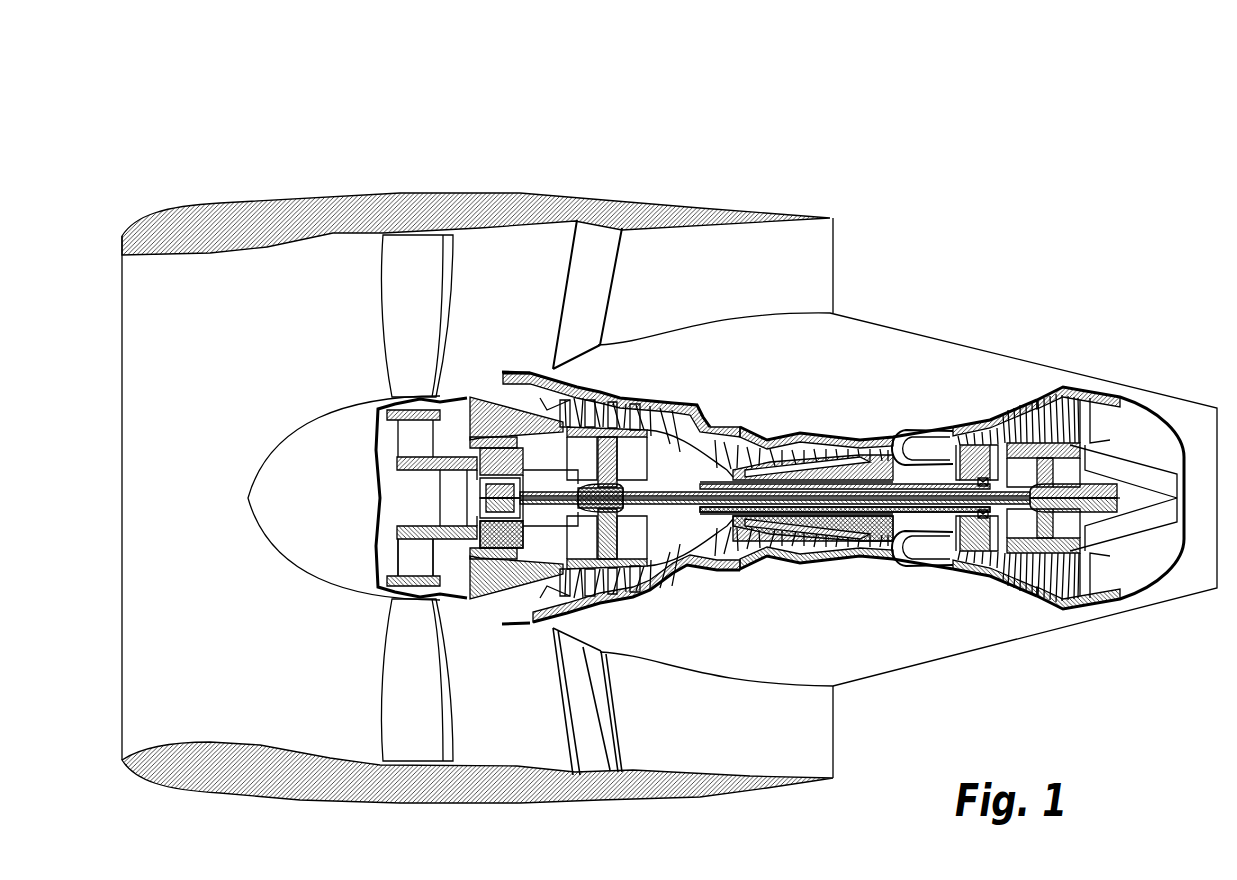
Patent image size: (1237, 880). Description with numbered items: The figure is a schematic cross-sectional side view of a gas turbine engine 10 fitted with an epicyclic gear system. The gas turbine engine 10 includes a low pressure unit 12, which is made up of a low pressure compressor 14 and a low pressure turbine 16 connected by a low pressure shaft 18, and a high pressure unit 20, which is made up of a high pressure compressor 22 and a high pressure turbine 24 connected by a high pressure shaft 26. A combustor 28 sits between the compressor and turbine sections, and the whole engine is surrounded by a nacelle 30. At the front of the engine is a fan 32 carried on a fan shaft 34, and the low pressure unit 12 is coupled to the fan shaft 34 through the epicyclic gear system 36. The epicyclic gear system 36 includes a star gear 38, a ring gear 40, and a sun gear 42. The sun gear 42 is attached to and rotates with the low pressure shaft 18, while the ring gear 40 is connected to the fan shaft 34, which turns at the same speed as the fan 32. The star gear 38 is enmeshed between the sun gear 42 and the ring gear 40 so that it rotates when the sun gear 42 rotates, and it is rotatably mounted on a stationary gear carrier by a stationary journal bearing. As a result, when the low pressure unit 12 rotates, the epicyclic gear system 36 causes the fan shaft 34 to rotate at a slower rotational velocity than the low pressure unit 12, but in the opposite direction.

The gas turbine engine 10 is at (692, 172).
The low pressure unit 12 is at (700, 517).
The low pressure compressor 14 is at (625, 395).
The low pressure turbine 16 is at (1043, 391).
The low pressure shaft 18 is at (707, 567).
The high pressure unit 20 is at (937, 525).
The high pressure compressor 22 is at (850, 435).
The high pressure turbine 24 is at (972, 426).
The high pressure shaft 26 is at (888, 517).
The combustor 28 is at (922, 423).
The nacelle 30 is at (507, 360).
The fan 32 is at (406, 332).
The fan shaft 34 is at (432, 592).
The epicyclic gear system 36 is at (476, 495).
The star gear 38 is at (468, 596).
The ring gear 40 is at (481, 580).
The sun gear 42 is at (512, 562).